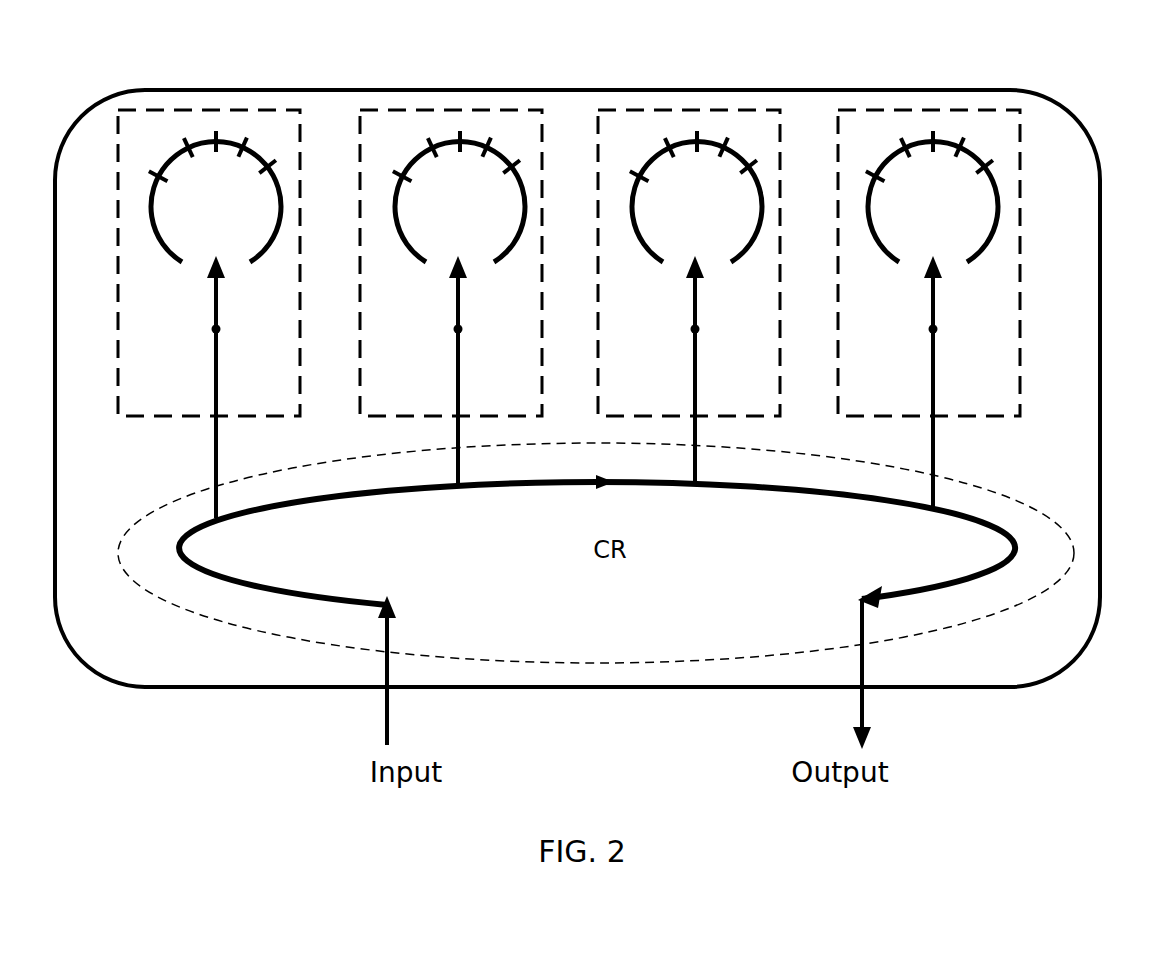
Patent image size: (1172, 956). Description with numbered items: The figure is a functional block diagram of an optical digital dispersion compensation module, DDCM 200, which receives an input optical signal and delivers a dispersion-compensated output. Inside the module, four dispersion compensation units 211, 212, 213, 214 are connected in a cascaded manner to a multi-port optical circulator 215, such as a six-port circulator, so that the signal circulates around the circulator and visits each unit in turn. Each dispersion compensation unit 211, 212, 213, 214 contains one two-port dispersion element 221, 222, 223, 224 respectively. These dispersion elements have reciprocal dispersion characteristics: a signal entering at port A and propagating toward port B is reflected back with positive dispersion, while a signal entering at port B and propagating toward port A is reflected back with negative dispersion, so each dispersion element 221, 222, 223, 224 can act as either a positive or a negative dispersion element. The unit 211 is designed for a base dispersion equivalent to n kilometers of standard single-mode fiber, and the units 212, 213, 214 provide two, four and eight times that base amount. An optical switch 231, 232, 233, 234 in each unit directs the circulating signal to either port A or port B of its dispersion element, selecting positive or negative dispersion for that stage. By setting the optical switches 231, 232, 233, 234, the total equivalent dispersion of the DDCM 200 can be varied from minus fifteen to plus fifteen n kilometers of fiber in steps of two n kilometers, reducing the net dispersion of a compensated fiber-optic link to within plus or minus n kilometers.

The optical digital dispersion compensation module 200 is at (910, 688).
The multi-port optical circulator 215 is at (1063, 530).
The dispersion compensation unit 211 is at (194, 110).
The dispersion compensation unit 212 is at (427, 110).
The dispersion compensation unit 213 is at (649, 110).
The dispersion compensation unit 214 is at (880, 110).
The two-port dispersion element 221 is at (252, 148).
The two-port dispersion element 222 is at (496, 148).
The two-port dispersion element 223 is at (722, 146).
The two-port dispersion element 224 is at (947, 140).
The optical switch 231 is at (216, 303).
The optical switch 232 is at (458, 303).
The optical switch 233 is at (695, 303).
The optical switch 234 is at (933, 303).